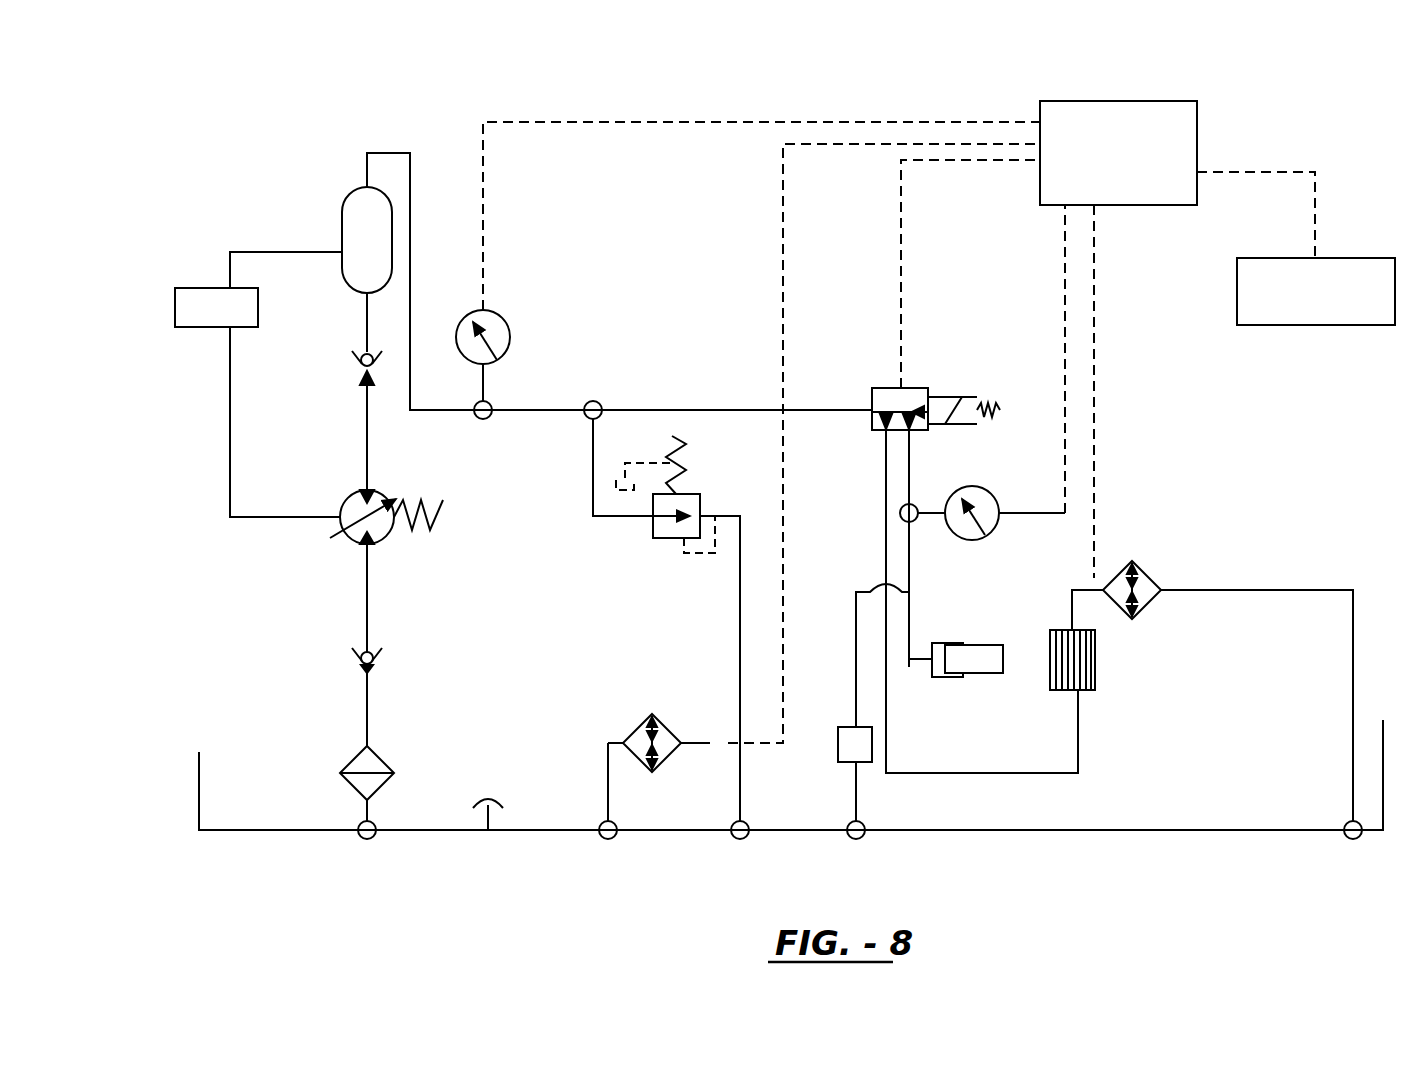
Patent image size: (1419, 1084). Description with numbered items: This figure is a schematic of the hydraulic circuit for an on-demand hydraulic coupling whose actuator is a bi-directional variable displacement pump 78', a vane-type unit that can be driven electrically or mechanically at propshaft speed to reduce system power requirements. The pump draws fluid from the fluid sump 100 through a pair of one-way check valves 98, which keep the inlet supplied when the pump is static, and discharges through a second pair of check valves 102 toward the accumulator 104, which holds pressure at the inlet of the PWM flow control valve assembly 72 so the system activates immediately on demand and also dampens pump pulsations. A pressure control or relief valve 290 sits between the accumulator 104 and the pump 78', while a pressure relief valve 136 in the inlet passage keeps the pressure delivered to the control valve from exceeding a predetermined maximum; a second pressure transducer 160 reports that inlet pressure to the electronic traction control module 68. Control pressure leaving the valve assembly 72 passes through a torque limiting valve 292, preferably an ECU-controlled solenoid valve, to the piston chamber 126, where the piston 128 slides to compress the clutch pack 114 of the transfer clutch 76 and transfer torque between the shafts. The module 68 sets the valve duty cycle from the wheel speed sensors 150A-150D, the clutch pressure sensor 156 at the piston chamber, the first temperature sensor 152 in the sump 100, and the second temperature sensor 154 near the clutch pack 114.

The electronic traction control module 68 is at (1202, 137).
The PWM flow control valve assembly 72 is at (877, 378).
The transfer clutch 76 is at (1112, 650).
The bi-directional variable displacement pump 78' is at (392, 551).
The one-way check valves 98 is at (360, 652).
The fluid sump 100 is at (265, 818).
The check valves 102 is at (357, 362).
The accumulator 104 is at (357, 201).
The clutch pack 114 is at (1087, 682).
The piston chamber 126 is at (937, 650).
The piston 128 is at (974, 659).
The pressure relief valve 136 is at (648, 536).
The wheel speed sensors 150A-150D is at (1248, 303).
The first temperature sensor 152 is at (662, 732).
The second temperature sensor 154 is at (1142, 580).
The clutch pressure sensor 156 is at (983, 500).
The second pressure transducer 160 is at (500, 334).
The pressure control or relief valve 290 is at (200, 313).
The torque limiting valve 292 is at (840, 758).